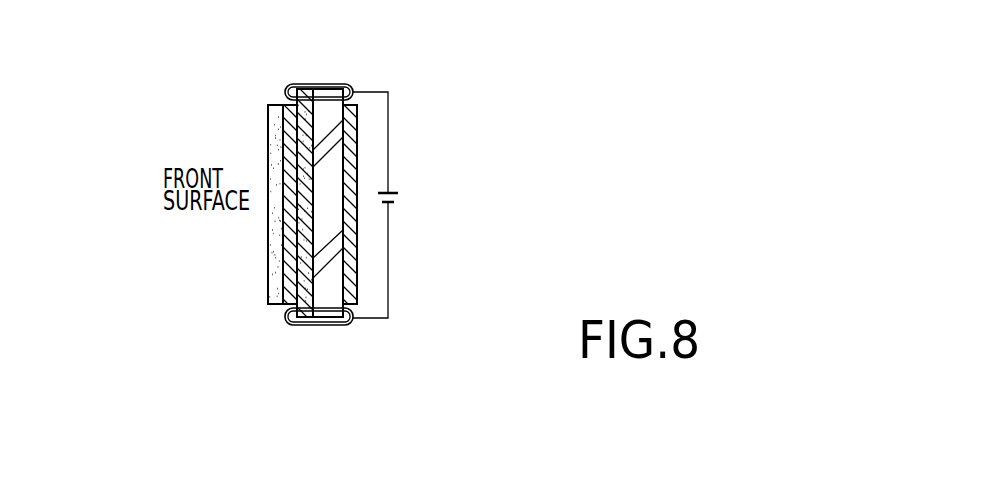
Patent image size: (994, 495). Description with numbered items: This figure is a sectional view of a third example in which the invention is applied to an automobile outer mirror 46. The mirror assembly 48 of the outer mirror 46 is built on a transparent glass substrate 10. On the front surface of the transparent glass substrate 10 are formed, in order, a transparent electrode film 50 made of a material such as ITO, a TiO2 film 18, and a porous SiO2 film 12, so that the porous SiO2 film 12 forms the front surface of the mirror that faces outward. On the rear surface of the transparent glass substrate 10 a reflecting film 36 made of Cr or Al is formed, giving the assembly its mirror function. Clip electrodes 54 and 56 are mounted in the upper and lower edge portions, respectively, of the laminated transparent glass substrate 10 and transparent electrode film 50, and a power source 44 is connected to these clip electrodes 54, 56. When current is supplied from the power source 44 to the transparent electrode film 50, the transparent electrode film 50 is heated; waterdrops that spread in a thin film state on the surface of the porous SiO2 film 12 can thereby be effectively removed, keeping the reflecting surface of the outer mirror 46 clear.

The transparent glass substrate 10 is at (327, 303).
The porous SiO2 film 12 is at (267, 295).
The TiO2 film 18 is at (290, 305).
The reflecting film 36 is at (357, 275).
The power source 44 is at (393, 192).
The automobile outer mirror 46 is at (531, 111).
The mirror assembly 48 is at (462, 243).
The transparent electrode film 50 is at (305, 317).
The clip electrode 54 is at (330, 83).
The clip electrode 56 is at (327, 327).